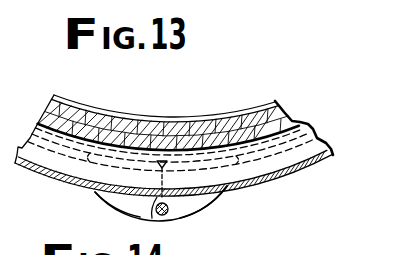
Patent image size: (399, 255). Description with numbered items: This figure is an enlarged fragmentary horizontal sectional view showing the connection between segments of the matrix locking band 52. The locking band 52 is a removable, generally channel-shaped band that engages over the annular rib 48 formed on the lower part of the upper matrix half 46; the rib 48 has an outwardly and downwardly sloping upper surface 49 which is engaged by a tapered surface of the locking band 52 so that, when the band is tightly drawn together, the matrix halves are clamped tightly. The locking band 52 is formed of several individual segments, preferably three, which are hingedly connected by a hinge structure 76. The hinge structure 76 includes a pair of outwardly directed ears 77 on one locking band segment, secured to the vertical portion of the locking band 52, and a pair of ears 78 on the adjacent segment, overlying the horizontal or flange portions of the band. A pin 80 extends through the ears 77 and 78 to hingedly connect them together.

The upper matrix half 46 is at (277, 103).
The annular rib 48 is at (281, 166).
The sloping upper surface 49 is at (309, 136).
The locking band 52 is at (312, 164).
The hinge structure 76 is at (182, 218).
The ears 77 is at (201, 203).
The ears 78 is at (112, 203).
The pin 80 is at (152, 217).